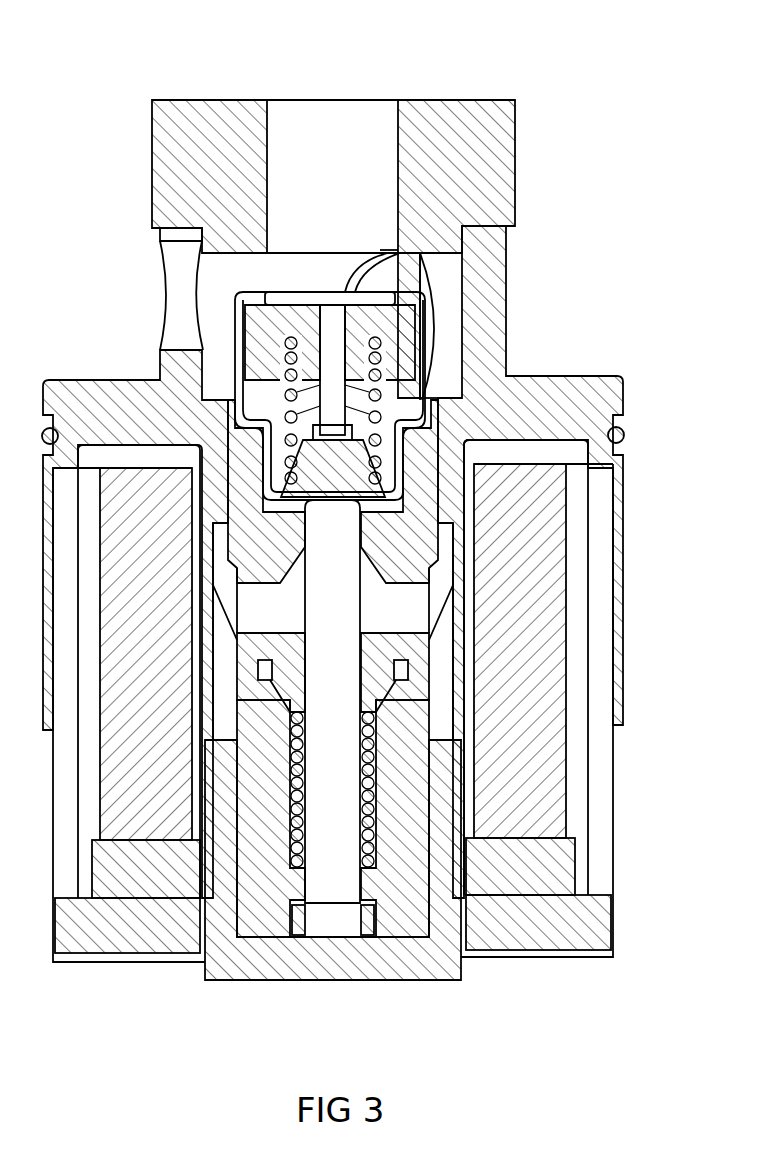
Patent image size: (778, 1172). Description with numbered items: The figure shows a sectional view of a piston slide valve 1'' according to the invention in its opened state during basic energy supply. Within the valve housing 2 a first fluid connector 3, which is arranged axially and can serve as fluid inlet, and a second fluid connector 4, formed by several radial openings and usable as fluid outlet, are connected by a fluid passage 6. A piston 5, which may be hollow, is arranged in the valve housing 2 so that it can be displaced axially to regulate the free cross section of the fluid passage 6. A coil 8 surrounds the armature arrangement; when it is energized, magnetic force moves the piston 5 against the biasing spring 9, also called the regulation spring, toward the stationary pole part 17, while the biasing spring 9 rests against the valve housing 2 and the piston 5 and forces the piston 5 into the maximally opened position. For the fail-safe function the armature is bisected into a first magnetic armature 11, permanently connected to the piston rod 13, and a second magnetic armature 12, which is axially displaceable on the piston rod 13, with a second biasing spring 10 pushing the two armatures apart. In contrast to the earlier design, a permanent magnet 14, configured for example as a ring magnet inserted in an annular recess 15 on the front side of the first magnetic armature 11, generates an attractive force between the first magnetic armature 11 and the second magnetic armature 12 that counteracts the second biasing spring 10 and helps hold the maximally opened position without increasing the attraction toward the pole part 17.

The piston slide valve 1'' is at (625, 135).
The valve housing 2 is at (623, 380).
The first fluid connector 3 is at (335, 100).
The second fluid connector 4 is at (156, 298).
The piston 5 is at (233, 330).
The fluid passage 6 is at (232, 272).
The coil 8 is at (555, 535).
The biasing spring 9 is at (380, 390).
The second biasing spring 10 is at (375, 838).
The first magnetic armature 11 is at (410, 648).
The second magnetic armature 12 is at (388, 803).
The piston rod 13 is at (332, 938).
The permanent magnet 14 is at (270, 672).
The annular recess 15 is at (395, 652).
The pole part 17 is at (283, 548).